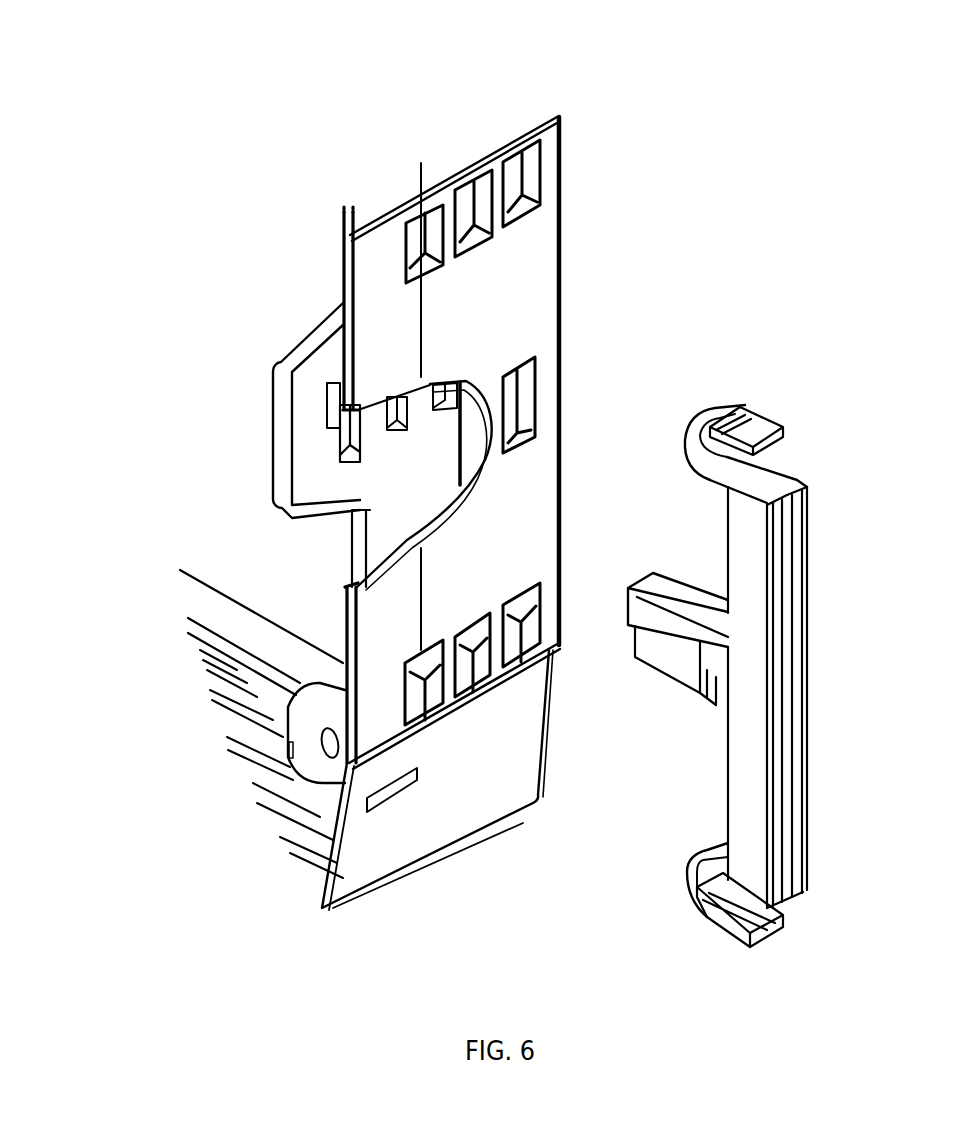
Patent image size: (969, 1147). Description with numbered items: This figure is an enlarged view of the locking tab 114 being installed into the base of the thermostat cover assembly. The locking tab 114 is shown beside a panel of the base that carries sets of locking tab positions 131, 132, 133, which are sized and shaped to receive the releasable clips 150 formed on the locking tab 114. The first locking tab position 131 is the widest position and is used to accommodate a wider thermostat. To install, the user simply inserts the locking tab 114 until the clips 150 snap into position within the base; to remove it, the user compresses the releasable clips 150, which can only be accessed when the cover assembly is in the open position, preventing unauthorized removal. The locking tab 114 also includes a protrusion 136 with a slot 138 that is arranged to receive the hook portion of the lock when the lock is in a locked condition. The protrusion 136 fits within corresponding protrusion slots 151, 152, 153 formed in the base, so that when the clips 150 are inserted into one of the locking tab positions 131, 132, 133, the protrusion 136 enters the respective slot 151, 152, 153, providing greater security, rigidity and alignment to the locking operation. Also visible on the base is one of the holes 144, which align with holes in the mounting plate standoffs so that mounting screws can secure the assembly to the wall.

The locking tab 114 is at (708, 579).
The first locking tab position 131 is at (413, 217).
The locking tab position 132 is at (468, 193).
The locking tab position 133 is at (520, 170).
The protrusion 136 is at (668, 583).
The slot 138 is at (720, 688).
The holes 144 is at (322, 741).
The releasable clips 150 is at (752, 417).
The protrusion slot 151 is at (327, 400).
The protrusion slot 152 is at (390, 400).
The protrusion slot 153 is at (512, 398).